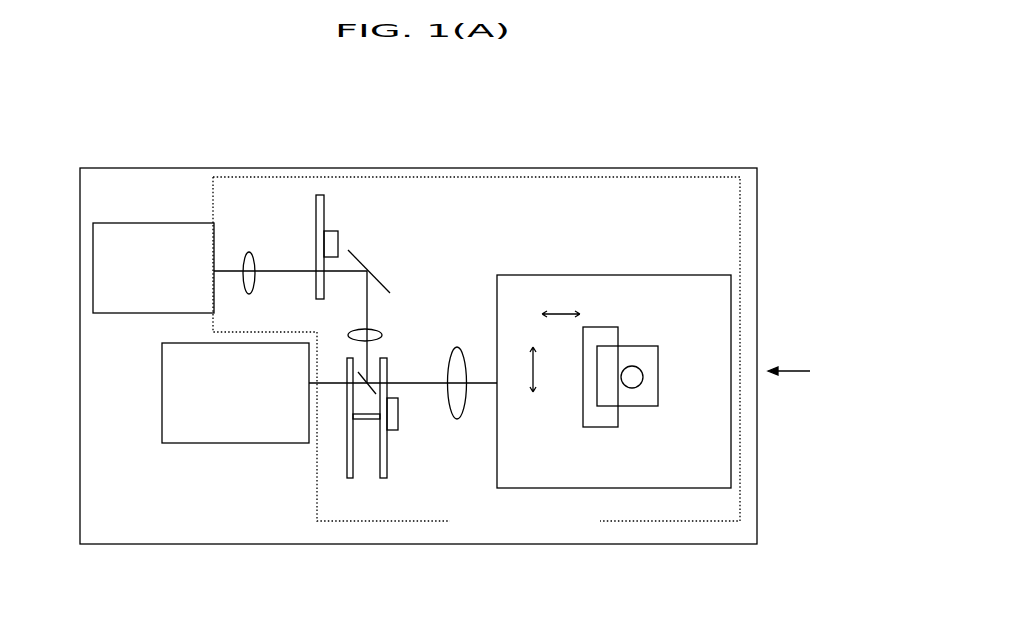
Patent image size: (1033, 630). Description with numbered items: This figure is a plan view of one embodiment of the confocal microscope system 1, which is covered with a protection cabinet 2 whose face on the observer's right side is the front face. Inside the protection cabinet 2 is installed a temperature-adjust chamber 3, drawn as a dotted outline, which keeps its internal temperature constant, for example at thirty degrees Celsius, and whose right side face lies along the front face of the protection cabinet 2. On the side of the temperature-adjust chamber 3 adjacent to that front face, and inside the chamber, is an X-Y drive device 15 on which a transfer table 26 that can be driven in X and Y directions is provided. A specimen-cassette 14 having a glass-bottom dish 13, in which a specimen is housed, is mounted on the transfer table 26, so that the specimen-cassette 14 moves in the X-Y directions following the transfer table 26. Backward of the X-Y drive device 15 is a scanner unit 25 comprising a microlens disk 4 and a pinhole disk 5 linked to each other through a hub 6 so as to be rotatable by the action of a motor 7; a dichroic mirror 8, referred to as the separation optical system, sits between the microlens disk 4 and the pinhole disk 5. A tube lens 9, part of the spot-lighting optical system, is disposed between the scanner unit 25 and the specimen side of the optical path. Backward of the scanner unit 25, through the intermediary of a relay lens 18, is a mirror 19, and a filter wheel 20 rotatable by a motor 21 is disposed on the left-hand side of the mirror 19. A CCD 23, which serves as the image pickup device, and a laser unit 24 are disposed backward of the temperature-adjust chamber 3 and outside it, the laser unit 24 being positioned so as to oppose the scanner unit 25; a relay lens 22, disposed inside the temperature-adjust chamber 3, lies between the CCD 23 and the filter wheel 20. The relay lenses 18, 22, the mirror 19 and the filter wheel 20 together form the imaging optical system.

The confocal microscope system 1 is at (299, 148).
The protection cabinet 2 is at (473, 166).
The temperature-adjust chamber 3 is at (567, 177).
The microlens disk 4 is at (346, 469).
The pinhole disk 5 is at (382, 478).
The hub 6 is at (347, 416).
The motor 7 is at (398, 428).
The dichroic mirror 8 is at (367, 377).
The tube lens 9 is at (460, 420).
The glass-bottom dish 13 is at (633, 388).
The specimen-cassette 14 is at (641, 345).
The X-Y drive device 15 is at (618, 275).
The relay lens 18 is at (380, 331).
The mirror 19 is at (398, 272).
The filter wheel 20 is at (325, 205).
The motor 21 is at (338, 240).
The relay lens 22 is at (249, 253).
The CCD 23 is at (148, 222).
The laser unit 24 is at (225, 443).
The scanner unit 25 is at (384, 508).
The transfer table 26 is at (595, 427).